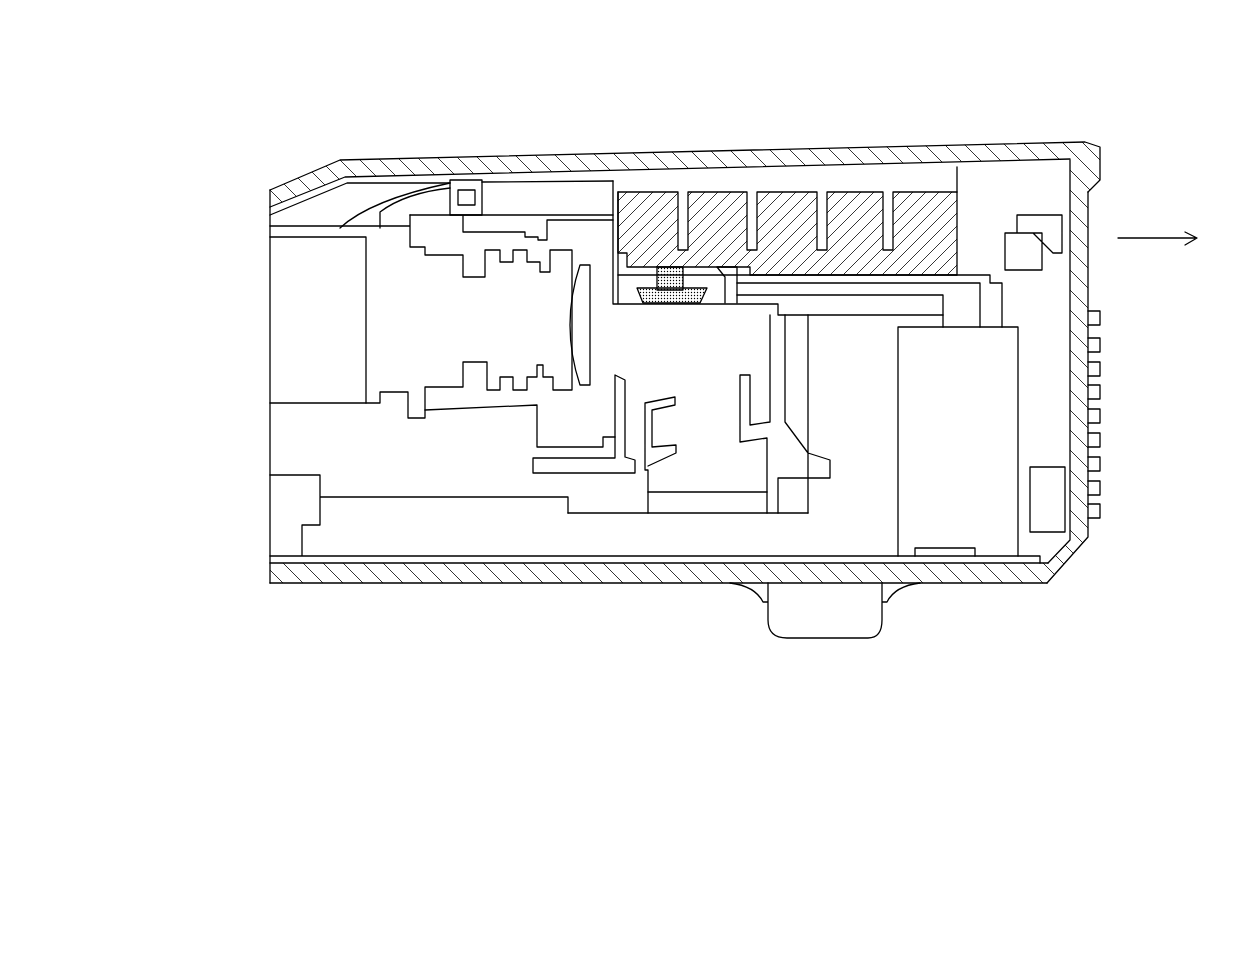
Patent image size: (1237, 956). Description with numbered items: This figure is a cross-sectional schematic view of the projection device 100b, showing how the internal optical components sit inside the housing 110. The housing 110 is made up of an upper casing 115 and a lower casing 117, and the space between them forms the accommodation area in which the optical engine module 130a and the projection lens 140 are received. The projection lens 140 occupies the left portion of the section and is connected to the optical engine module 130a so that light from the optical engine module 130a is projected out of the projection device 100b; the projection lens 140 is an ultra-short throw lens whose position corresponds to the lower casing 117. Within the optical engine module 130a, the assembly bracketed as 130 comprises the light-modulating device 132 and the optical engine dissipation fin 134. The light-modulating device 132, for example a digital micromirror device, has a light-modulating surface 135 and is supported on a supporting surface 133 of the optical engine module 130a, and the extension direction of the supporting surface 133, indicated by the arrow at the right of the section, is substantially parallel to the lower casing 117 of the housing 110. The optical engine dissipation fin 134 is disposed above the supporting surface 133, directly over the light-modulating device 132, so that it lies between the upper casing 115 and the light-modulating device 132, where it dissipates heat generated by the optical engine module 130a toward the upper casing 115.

The electronic device 100b is at (1057, 623).
The housing 110 is at (685, 366).
The upper casing 115 is at (862, 147).
The lower casing 117 is at (900, 573).
The light source module 130 is at (738, 97).
The optical engine module 130a is at (718, 473).
The light-modulating device 132 is at (668, 288).
The supporting surface 133 is at (626, 302).
The optical engine dissipation fin 134 is at (711, 210).
The light-modulating surface 135 is at (671, 306).
The projection lens 140 is at (292, 297).